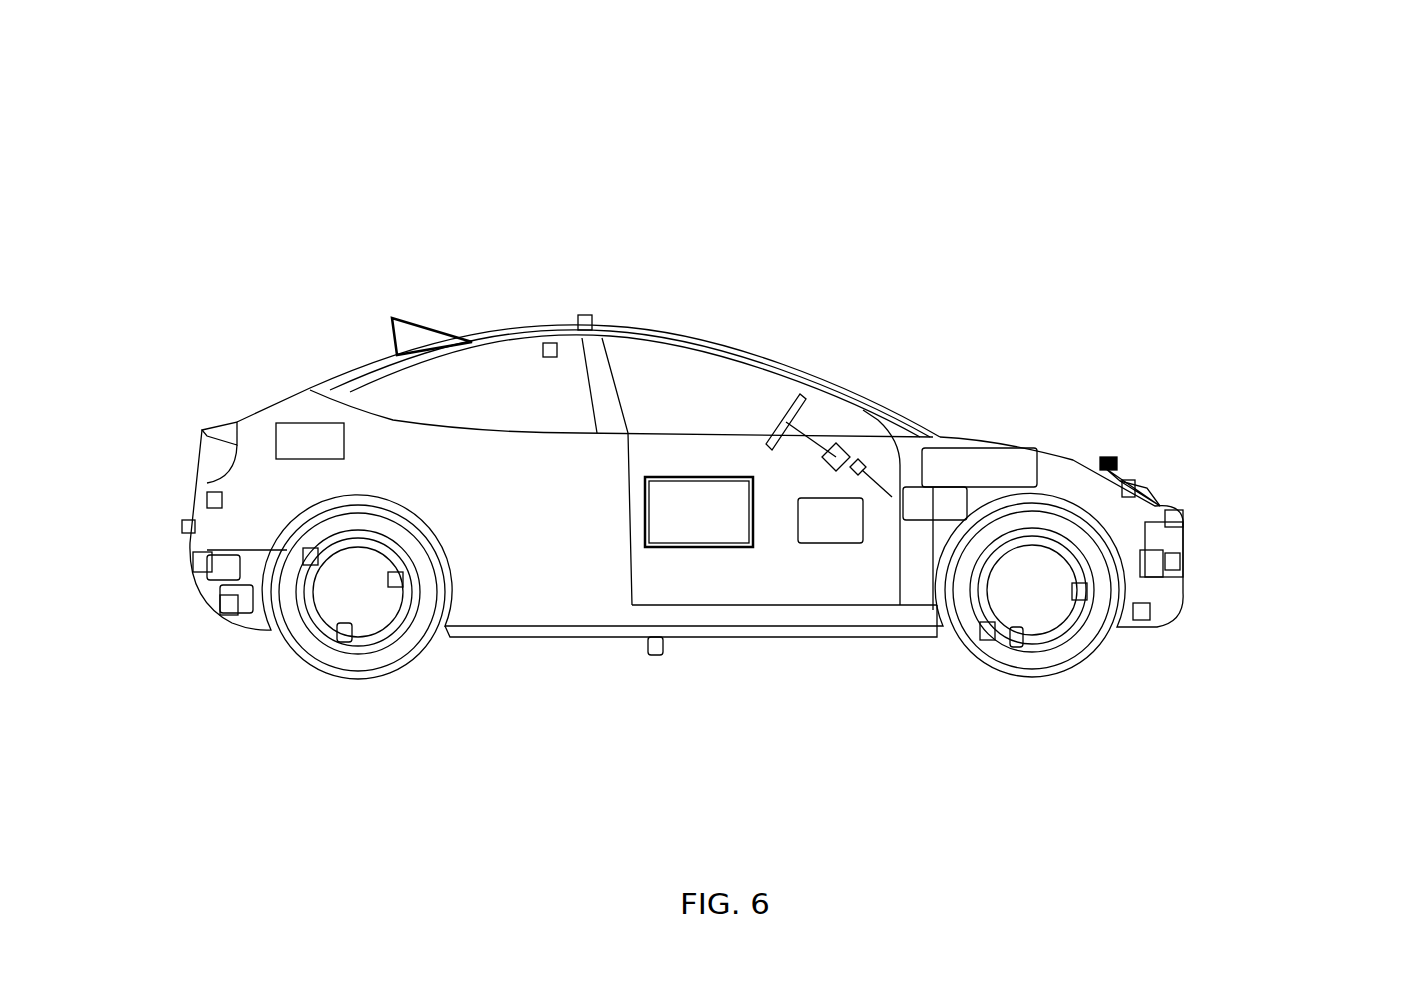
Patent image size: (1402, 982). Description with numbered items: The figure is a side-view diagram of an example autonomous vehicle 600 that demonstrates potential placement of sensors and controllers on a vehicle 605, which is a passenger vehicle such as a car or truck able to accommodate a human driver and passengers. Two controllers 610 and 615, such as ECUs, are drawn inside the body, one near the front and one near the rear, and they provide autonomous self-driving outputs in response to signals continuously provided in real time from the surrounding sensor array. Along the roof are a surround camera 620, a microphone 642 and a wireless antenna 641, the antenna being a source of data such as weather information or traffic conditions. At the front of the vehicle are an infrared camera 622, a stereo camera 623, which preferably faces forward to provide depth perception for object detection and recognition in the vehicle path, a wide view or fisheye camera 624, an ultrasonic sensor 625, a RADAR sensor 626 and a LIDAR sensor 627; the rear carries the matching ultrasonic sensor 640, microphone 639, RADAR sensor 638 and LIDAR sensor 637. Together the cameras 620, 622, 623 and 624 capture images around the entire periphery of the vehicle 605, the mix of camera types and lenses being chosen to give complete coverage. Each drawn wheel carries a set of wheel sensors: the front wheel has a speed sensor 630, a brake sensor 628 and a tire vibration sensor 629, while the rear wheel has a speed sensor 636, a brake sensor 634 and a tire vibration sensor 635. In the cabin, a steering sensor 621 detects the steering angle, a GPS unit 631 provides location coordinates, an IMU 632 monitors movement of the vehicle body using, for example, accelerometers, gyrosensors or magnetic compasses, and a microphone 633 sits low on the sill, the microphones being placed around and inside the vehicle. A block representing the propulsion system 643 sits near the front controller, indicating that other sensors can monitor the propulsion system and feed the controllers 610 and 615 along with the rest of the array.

The autonomous vehicle 600 is at (168, 66).
The vehicle 605 is at (742, 339).
The controller 610 is at (961, 511).
The controller 615 is at (299, 459).
The surround camera 620 is at (592, 315).
The steering sensor 621 is at (815, 492).
The infrared camera 622 is at (1105, 467).
The stereo camera 623 is at (1123, 483).
The wide view camera 624 is at (1150, 488).
The ultrasonic sensor 625 is at (1183, 520).
The RADAR sensor 626 is at (1180, 560).
The LIDAR sensor 627 is at (1255, 700).
The brake sensor 628 is at (1080, 602).
The tire vibration sensor 629 is at (1013, 647).
The speed sensor 630 is at (980, 640).
The GPS unit 631 is at (819, 536).
The IMU 632 is at (686, 536).
The microphone 633 is at (648, 645).
The brake sensor 634 is at (403, 587).
The tire vibration sensor 635 is at (340, 643).
The speed sensor 636 is at (312, 565).
The LIDAR sensor 637 is at (220, 613).
The RADAR sensor 638 is at (200, 563).
The microphone 639 is at (180, 522).
The ultrasonic sensor 640 is at (241, 387).
The wireless antenna 641 is at (368, 302).
The microphone 642 is at (540, 343).
The propulsion system 643 is at (1031, 476).